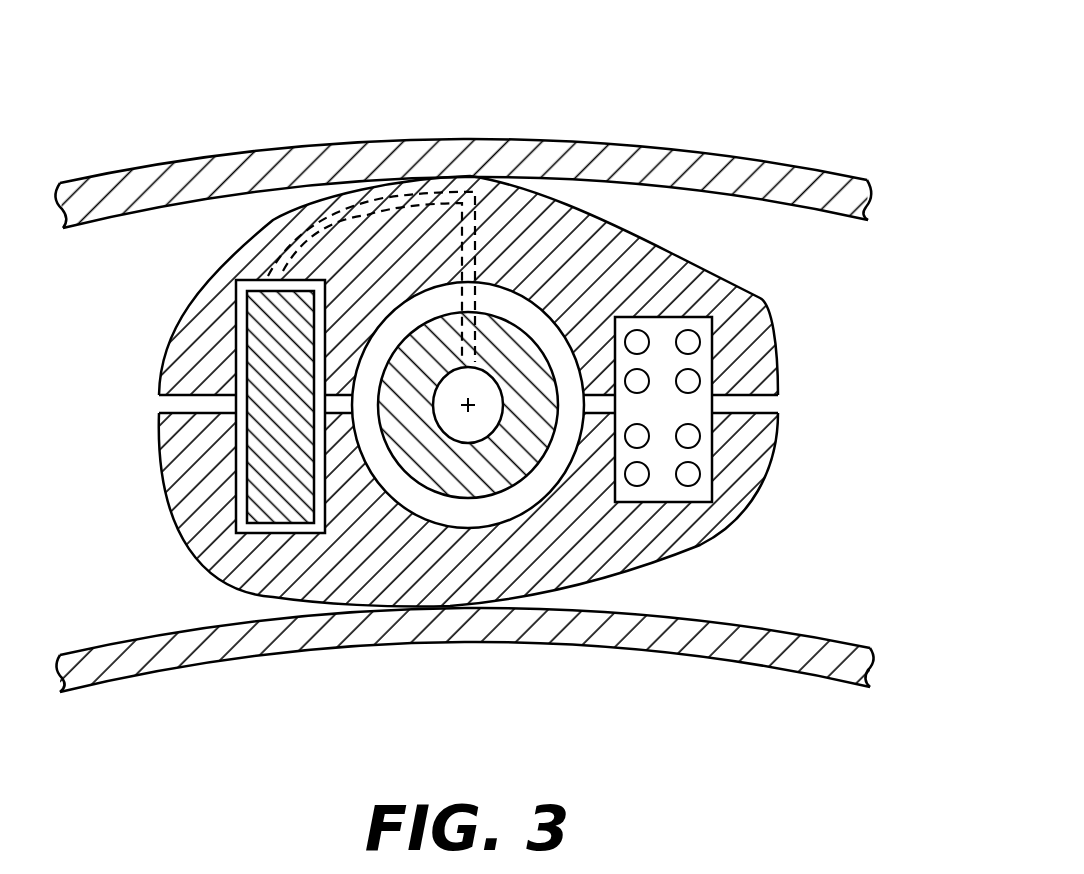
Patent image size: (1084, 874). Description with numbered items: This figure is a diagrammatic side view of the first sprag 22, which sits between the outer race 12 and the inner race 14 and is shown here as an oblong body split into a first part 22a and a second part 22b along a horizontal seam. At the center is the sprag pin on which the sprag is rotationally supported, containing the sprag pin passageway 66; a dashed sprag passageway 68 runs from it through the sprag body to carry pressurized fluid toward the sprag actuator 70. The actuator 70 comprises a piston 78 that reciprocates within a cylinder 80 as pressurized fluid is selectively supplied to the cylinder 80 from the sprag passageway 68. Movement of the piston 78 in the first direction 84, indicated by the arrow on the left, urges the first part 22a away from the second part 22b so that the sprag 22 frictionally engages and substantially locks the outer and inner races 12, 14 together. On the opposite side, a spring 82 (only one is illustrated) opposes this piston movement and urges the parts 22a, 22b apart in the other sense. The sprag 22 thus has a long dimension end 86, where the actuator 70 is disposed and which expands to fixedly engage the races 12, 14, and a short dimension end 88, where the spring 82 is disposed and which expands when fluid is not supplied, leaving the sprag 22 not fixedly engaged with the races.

The outer race 12 is at (93, 192).
The inner race 14 is at (120, 668).
The first sprag 22 is at (860, 345).
The first part 22a is at (765, 377).
The second part 22b is at (753, 450).
The sprag pin passageway 66 is at (477, 343).
The sprag passageway 68 is at (484, 190).
The sprag actuator 70 is at (210, 324).
The piston 78 is at (277, 312).
The cylinder 80 is at (258, 285).
The spring 82 is at (693, 342).
The first direction 84 is at (130, 500).
The long dimension end 86 is at (175, 557).
The short dimension end 88 is at (793, 543).